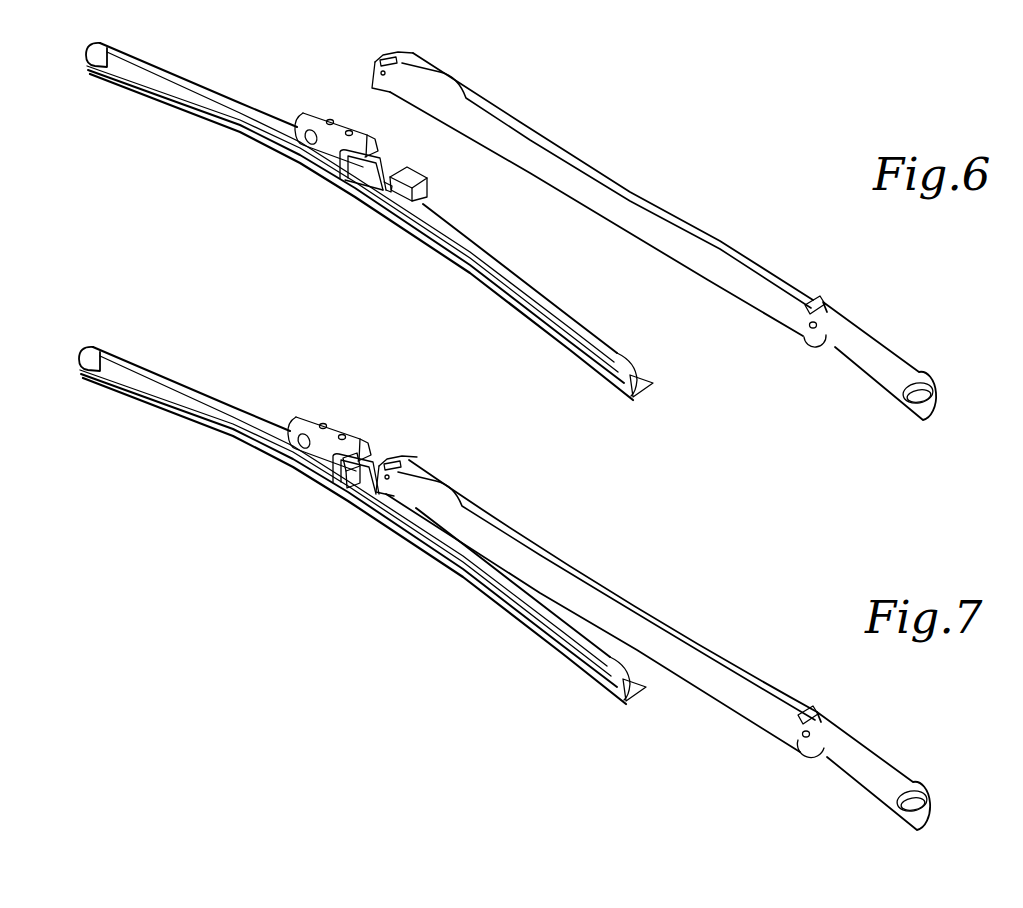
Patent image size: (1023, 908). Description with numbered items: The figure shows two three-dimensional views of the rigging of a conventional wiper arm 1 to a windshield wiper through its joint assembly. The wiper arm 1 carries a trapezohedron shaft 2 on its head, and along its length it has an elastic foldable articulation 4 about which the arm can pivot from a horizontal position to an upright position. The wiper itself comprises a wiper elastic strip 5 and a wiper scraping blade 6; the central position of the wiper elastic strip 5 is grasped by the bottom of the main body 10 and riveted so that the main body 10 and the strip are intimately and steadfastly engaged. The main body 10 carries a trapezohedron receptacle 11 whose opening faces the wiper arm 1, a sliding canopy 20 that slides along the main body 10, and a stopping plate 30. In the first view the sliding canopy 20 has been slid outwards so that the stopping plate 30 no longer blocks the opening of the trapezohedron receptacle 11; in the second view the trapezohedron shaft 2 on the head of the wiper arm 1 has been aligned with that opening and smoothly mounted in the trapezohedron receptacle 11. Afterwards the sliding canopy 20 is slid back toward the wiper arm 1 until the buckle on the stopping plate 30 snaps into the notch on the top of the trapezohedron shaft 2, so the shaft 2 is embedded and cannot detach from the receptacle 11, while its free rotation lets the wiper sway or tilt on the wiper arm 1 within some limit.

In FIG. 6, the wiper arm 1 is at (613, 198).
In FIG. 7, the wiper arm 1 is at (640, 613).
In FIG. 6, the trapezohedron shaft 2 is at (383, 57).
In FIG. 7, the trapezohedron shaft 2 is at (396, 465).
In FIG. 6, the elastic foldable articulation 4 is at (811, 335).
In FIG. 6, the wiper elastic strip 5 is at (440, 240).
In FIG. 7, the wiper elastic strip 5 is at (354, 523).
In FIG. 6, the wiper scraping blade 6 is at (580, 355).
In FIG. 7, the wiper scraping blade 6 is at (363, 537).
In FIG. 6, the main body 10 is at (428, 192).
In FIG. 7, the main body 10 is at (340, 490).
In FIG. 6, the trapezohedron receptacle 11 is at (392, 178).
In FIG. 6, the sliding canopy 20 is at (318, 118).
In FIG. 7, the sliding canopy 20 is at (329, 416).
In FIG. 6, the stopping plate 30 is at (386, 160).
In FIG. 7, the stopping plate 30 is at (363, 448).